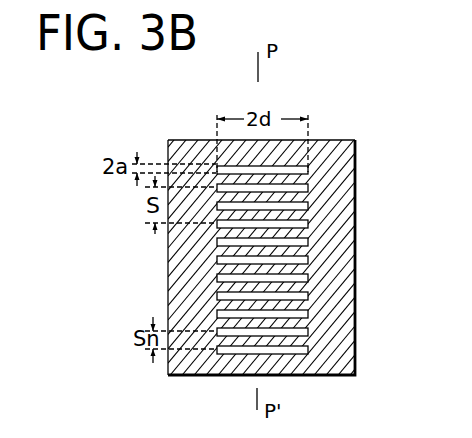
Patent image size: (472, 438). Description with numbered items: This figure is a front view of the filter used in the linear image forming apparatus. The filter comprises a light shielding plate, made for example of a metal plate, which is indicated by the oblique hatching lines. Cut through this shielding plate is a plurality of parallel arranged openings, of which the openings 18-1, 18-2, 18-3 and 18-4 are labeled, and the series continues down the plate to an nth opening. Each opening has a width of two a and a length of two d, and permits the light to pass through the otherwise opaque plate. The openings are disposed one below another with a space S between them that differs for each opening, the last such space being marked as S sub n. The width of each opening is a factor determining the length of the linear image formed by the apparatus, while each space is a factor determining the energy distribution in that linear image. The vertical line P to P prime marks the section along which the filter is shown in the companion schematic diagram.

The opening 18-1 is at (308, 170).
The opening 18-2 is at (308, 188).
The opening 18-3 is at (308, 206).
The opening 18-4 is at (308, 224).